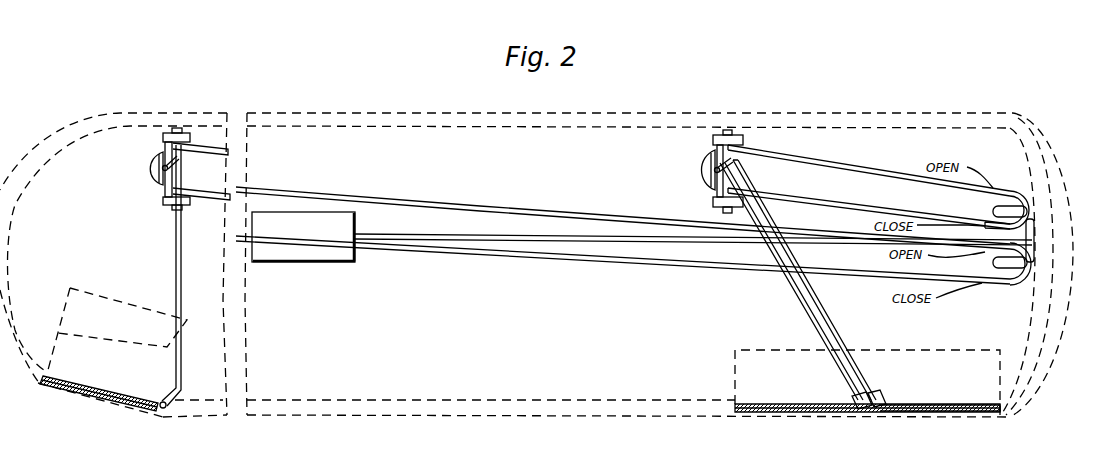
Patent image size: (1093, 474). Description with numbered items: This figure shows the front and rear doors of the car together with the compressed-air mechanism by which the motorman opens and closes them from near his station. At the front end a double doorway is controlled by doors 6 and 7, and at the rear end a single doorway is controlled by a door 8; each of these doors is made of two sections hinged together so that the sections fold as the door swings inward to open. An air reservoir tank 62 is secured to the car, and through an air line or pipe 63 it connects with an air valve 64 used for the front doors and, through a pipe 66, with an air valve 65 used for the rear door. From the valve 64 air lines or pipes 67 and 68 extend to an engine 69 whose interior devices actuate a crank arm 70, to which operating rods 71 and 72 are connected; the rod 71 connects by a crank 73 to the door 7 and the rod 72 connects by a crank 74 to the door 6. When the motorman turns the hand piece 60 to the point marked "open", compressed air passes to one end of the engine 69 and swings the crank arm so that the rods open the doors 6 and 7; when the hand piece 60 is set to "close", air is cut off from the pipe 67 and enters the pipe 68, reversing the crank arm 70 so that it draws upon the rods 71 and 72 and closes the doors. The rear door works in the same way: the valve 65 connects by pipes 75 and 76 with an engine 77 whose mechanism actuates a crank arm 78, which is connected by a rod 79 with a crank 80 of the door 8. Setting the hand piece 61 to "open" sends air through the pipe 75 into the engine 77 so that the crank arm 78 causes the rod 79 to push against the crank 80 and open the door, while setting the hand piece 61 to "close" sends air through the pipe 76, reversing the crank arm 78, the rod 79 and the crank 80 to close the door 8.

The front door 6 is at (931, 413).
The front door 7 is at (828, 414).
The rear door 8 is at (115, 402).
The hand piece 60 is at (993, 208).
The hand piece 61 is at (993, 262).
The air reservoir tank 62 is at (285, 252).
The air line or pipe 63 is at (667, 236).
The air valve 64 is at (1013, 191).
The air valve 65 is at (1013, 286).
The pipe 66 is at (1033, 238).
The air line or pipe 67 is at (827, 164).
The air line or pipe 68 is at (815, 202).
The engine 69 is at (713, 150).
The crank arm 70 is at (708, 168).
The operating rod 71 is at (833, 307).
The operating rod 72 is at (806, 307).
The crank 73 is at (884, 399).
The crank 74 is at (855, 399).
The pipe 75 is at (197, 151).
The pipe 76 is at (197, 199).
The engine 77 is at (163, 150).
The crank arm 78 is at (158, 170).
The rod 79 is at (175, 245).
The crank 80 is at (166, 406).